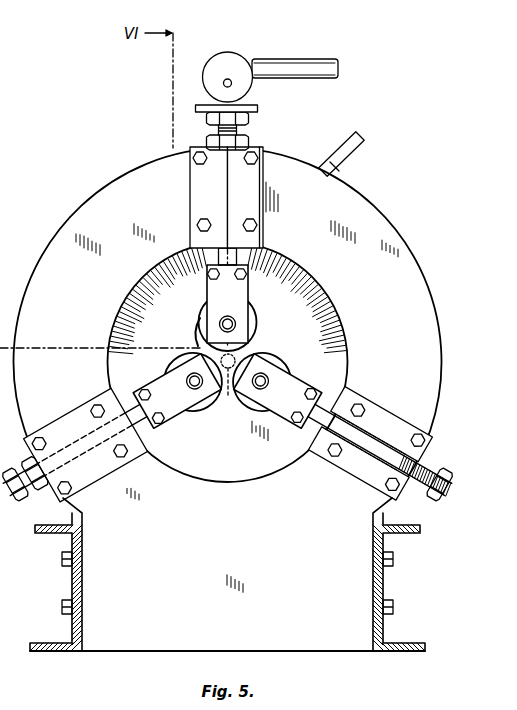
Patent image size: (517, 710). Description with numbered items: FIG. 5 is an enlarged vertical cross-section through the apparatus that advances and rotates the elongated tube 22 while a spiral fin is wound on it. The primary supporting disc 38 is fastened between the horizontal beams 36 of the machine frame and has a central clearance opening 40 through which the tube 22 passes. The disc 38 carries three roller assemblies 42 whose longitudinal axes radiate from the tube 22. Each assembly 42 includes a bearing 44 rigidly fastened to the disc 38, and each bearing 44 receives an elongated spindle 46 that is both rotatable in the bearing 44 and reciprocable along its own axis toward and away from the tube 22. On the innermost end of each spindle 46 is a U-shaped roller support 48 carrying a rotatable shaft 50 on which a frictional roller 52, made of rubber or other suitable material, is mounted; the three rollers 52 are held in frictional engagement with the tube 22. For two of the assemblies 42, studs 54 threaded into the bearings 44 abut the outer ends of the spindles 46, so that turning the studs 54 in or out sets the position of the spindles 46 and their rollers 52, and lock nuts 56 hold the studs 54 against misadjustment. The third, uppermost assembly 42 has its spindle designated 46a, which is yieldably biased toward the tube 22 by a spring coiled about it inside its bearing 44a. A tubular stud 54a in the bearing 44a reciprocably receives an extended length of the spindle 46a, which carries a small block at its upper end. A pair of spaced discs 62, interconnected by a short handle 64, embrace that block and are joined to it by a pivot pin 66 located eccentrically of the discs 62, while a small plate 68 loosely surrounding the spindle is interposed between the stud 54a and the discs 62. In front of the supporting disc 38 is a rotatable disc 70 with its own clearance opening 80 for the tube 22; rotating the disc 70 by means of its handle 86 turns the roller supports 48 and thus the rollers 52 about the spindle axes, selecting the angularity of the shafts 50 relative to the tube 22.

The elongated tube 22 is at (228, 389).
The horizontal beams 36 is at (83, 587).
The primary supporting disc 38 is at (413, 281).
The central clearance opening 40 is at (134, 294).
The roller assemblies 42 is at (265, 202).
The bearing 44 is at (353, 473).
The bearing of uppermost assembly 44a is at (190, 199).
The spindle 46 is at (326, 398).
The spindle of uppermost assembly 46a is at (238, 257).
The U-shaped roller support 48 is at (207, 293).
The rotatable shaft 50 is at (236, 317).
The frictional roller 52 is at (258, 320).
The studs 54 is at (444, 491).
The tubular stud 54a is at (250, 119).
The lock nuts 56 is at (249, 141).
The spaced discs 62 is at (214, 80).
The handle 64 is at (312, 79).
The pivot pin 66 is at (225, 73).
The small plate 68 is at (206, 106).
The disc 70 is at (313, 293).
The clearance opening 80 is at (197, 338).
The handle 86 is at (357, 148).